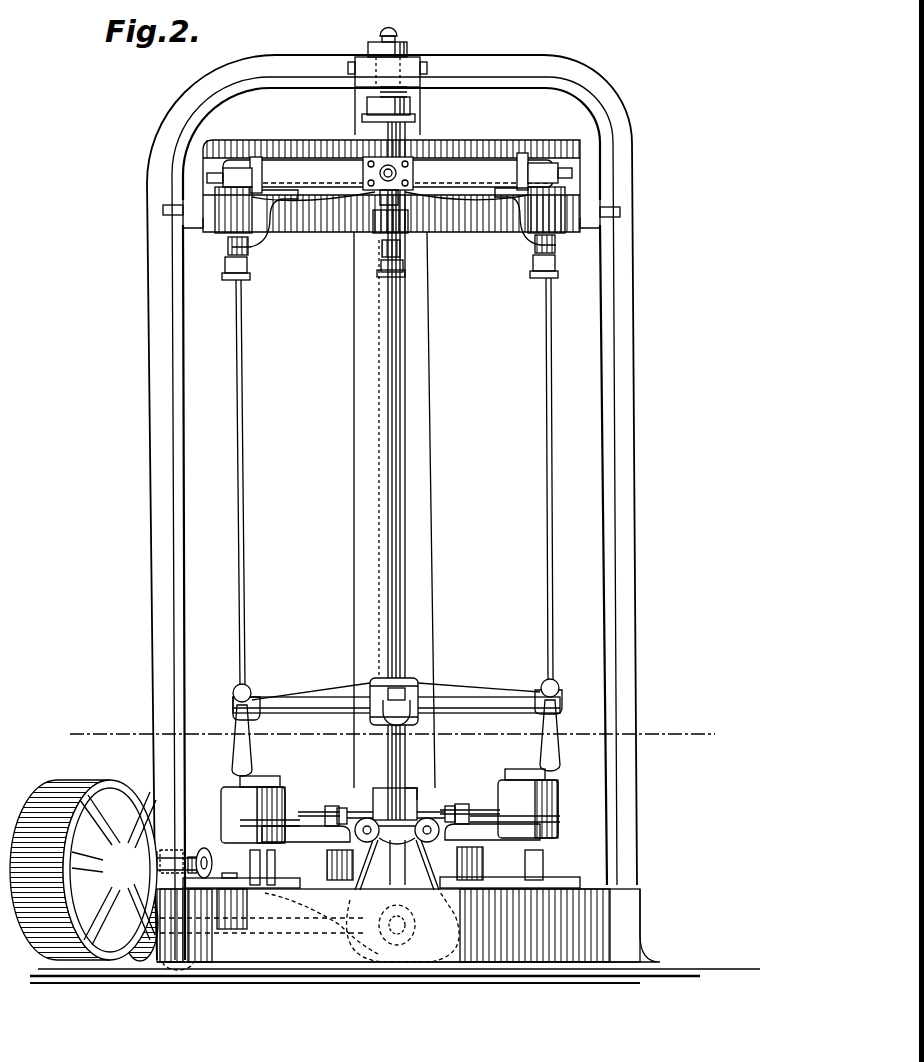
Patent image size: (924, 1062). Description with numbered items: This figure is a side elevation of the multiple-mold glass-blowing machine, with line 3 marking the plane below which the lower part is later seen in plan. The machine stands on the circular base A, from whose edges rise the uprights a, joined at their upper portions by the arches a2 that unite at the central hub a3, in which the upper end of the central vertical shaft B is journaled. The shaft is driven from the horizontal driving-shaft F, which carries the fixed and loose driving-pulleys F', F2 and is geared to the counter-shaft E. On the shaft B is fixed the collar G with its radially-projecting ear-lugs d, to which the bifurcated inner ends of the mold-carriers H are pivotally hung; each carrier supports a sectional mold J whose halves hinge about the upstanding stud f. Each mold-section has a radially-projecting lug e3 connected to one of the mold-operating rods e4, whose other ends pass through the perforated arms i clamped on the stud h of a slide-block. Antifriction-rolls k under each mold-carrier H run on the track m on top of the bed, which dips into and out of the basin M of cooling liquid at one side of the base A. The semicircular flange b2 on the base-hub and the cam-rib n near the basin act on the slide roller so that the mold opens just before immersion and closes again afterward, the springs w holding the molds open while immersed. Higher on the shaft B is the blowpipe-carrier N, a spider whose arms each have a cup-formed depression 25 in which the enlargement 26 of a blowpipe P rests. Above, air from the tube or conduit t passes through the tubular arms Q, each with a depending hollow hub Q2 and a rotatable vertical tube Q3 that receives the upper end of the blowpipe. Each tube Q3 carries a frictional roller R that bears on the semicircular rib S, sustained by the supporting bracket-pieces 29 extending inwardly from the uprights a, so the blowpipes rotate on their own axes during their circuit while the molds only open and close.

The uprights a is at (432, 397).
The arches a2 is at (394, 509).
The central hub a3 is at (410, 50).
The tube or conduit t is at (380, 32).
The central vertical shaft B is at (380, 470).
The tubular arms Q is at (330, 150).
The hollow hub Q2 is at (405, 200).
The vertical tube Q3 is at (228, 250).
The frictional roller R is at (262, 230).
The semicircular flange or rib S is at (183, 226).
The supporting bracket-pieces 29 is at (180, 218).
The blowpipe P is at (394, 481).
The upstanding stud f is at (290, 770).
The blowpipe-carrier N is at (326, 684).
The cup-formed depression 25 is at (405, 700).
The shoulder or enlargement 26 is at (236, 687).
The section line 3 is at (390, 731).
The sectional mold J is at (400, 806).
The radially-projecting lug e3 is at (240, 823).
The mold-operating rods e4 is at (300, 812).
The mold-carrier H is at (401, 834).
The stud h is at (331, 806).
The arms i is at (342, 808).
The ear-lugs d is at (362, 812).
The collar G is at (420, 826).
The springs w is at (420, 790).
The antifriction-rolls k is at (554, 858).
The semicircular flange b2 is at (339, 865).
The cam-rib n is at (483, 860).
The track m is at (568, 874).
The basin M is at (398, 925).
The base A is at (290, 962).
The cam J' is at (362, 953).
The counter-shaft E is at (251, 910).
The horizontal driving-shaft F is at (184, 846).
The fixed driving-pulley F' is at (130, 858).
The loose driving-pulley F2 is at (83, 857).